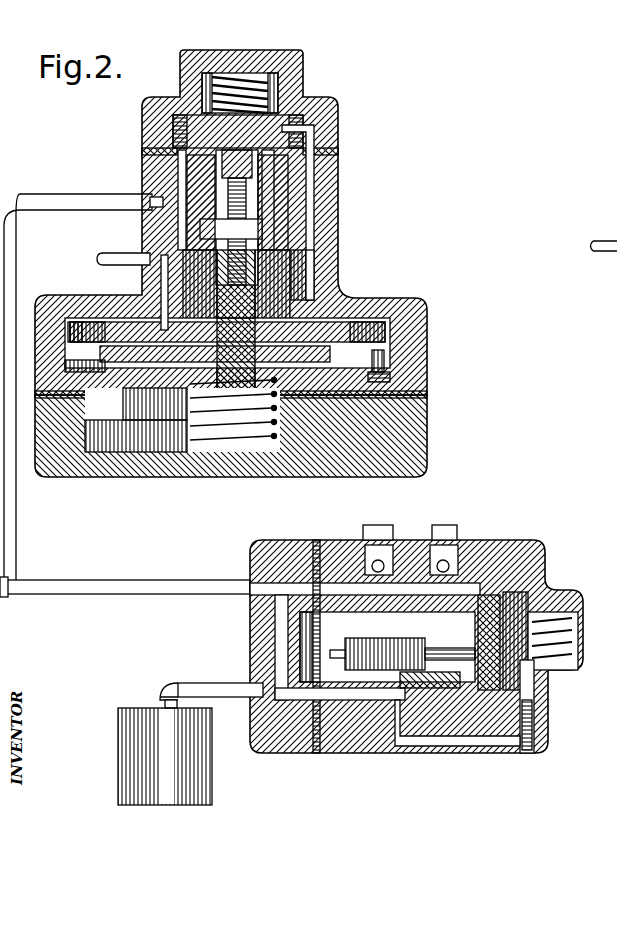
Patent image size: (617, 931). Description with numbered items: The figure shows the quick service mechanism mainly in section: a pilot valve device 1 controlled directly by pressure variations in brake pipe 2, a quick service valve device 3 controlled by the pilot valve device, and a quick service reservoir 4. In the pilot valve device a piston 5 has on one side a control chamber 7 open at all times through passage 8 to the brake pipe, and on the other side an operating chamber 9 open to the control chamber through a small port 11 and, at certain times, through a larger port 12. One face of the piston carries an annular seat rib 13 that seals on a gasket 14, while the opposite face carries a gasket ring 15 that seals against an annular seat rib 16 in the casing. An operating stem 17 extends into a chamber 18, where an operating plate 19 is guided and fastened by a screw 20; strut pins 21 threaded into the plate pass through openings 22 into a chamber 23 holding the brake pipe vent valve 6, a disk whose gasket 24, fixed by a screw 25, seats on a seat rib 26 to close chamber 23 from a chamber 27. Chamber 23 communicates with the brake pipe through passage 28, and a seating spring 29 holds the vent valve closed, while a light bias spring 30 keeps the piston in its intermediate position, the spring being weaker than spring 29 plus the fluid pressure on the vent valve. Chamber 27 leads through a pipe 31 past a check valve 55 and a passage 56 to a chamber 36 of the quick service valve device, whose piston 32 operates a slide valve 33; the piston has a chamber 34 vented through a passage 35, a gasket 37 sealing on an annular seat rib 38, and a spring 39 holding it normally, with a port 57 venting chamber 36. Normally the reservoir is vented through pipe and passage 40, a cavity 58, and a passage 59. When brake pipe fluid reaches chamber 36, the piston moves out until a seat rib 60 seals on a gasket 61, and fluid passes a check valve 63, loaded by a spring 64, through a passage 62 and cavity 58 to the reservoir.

The pilot valve device 1 is at (145, 158).
The brake pipe 2 is at (108, 254).
The quick service valve device 3 is at (250, 553).
The quick service reservoir 4 is at (117, 753).
The piston 5 is at (390, 340).
The brake pipe vent valve 6 is at (314, 137).
The control chamber 7 is at (83, 328).
The passage 8 is at (163, 285).
The operating chamber 9 is at (160, 437).
The small port 11 is at (387, 315).
The larger port 12 is at (392, 365).
The annular seat rib 13 is at (392, 388).
The gasket 14 is at (407, 412).
The gasket ring 15 is at (72, 340).
The annular seat rib 16 is at (78, 327).
The operating stem 17 is at (332, 297).
The chamber 18 is at (330, 281).
The operating plate 19 is at (312, 249).
The screw 20 is at (231, 231).
The strut pins 21 is at (178, 214).
The openings 22 is at (200, 172).
The chamber 23 is at (290, 128).
The gasket 24 is at (175, 151).
The screw 25 is at (182, 160).
The seat rib 26 is at (300, 164).
The chamber 27 is at (244, 178).
The passage 28 is at (334, 262).
The seating spring 29 is at (278, 90).
The bias spring 30 is at (272, 440).
The pipe 31 is at (37, 192).
The piston 32 is at (553, 596).
The slide valve 33 is at (358, 650).
The chamber 34 is at (522, 704).
The passage 35 is at (562, 646).
The chamber 36 is at (305, 642).
The gasket 37 is at (506, 578).
The annular seat rib 38 is at (482, 587).
The spring 39 is at (583, 601).
The pipe and passage 40 is at (203, 684).
The check valve 55 is at (443, 560).
The passage 56 is at (478, 585).
The port 57 is at (524, 592).
The cavity 58 is at (409, 650).
The passage 59 is at (403, 746).
The seat rib 60 is at (510, 746).
The gasket 61 is at (537, 755).
The passage 62 is at (422, 692).
The check valve 63 is at (336, 532).
The spring 64 is at (378, 543).